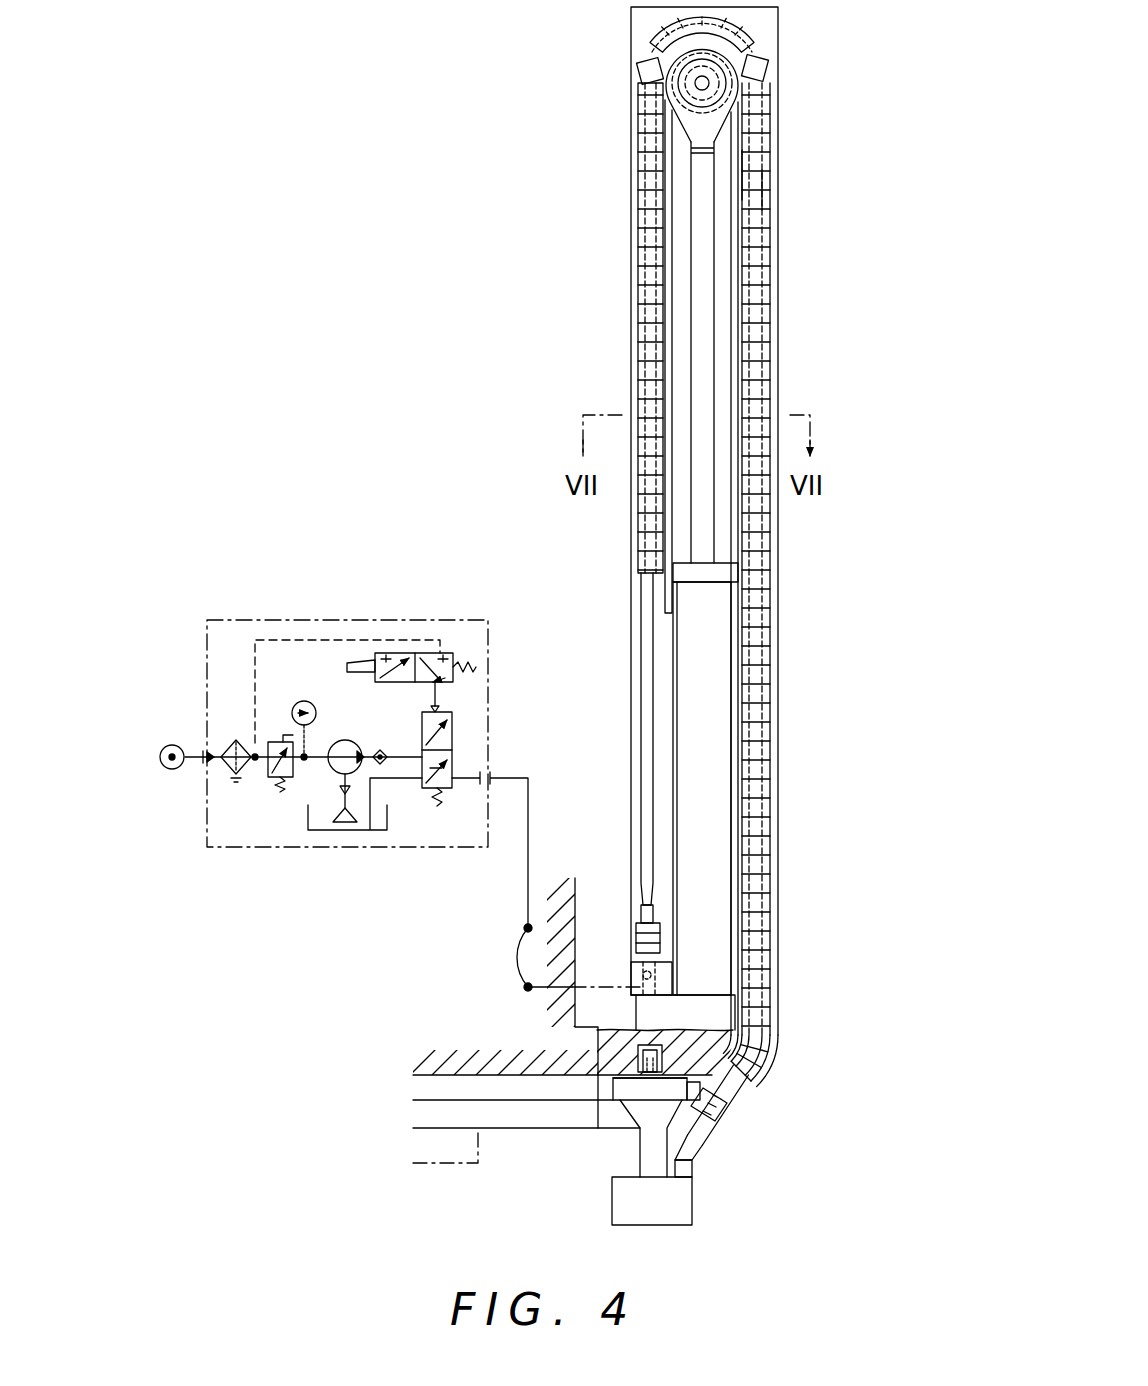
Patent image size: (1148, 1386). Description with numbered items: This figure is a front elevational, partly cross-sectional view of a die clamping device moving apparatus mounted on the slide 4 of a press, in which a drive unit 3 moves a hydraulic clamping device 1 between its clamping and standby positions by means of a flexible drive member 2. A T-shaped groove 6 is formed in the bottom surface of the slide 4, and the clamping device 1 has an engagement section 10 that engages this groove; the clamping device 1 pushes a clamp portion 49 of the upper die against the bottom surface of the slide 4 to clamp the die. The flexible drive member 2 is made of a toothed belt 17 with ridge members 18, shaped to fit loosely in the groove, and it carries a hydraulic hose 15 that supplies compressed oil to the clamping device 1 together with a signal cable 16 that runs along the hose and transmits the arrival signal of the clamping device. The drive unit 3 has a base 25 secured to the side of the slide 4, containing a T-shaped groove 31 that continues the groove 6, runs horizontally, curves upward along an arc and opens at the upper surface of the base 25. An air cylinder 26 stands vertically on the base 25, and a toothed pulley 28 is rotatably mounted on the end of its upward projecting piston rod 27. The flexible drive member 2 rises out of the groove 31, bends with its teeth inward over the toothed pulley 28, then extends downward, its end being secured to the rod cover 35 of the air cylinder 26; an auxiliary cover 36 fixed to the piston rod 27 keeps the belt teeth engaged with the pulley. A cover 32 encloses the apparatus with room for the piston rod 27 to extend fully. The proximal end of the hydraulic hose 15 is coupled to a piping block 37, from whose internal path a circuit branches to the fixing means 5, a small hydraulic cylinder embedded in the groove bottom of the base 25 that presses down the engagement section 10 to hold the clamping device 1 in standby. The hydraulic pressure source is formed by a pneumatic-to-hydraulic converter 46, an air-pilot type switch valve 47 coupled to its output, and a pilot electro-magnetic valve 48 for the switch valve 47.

The hydraulic clamping device 1 is at (610, 1192).
The flexible drive member 2 is at (640, 265).
The drive unit 3 is at (702, 594).
The slide 4 is at (366, 805).
The fixing means 5 is at (625, 1058).
The T-shaped groove 6 is at (406, 1078).
The engagement section 10 is at (645, 1108).
The hydraulic hose 15 is at (652, 712).
The signal cable 16 is at (748, 1085).
The toothed belt 17 is at (748, 170).
The ridge members 18 is at (764, 192).
The base 25 is at (634, 1046).
The air cylinder 26 is at (690, 637).
The piston rod 27 is at (707, 297).
The toothed pulley 28 is at (730, 110).
The T-shaped groove 31 is at (600, 1088).
The cover 32 is at (778, 82).
The rod cover 35 is at (717, 573).
The auxiliary cover 36 is at (736, 24).
The piping block 37 is at (627, 975).
The pneumatic-to-hydraulic converter 46 is at (345, 740).
The air-pilot type switch valve 47 is at (452, 745).
The pilot electro-magnetic valve 48 is at (400, 683).
The clamp portion 49 is at (462, 1165).